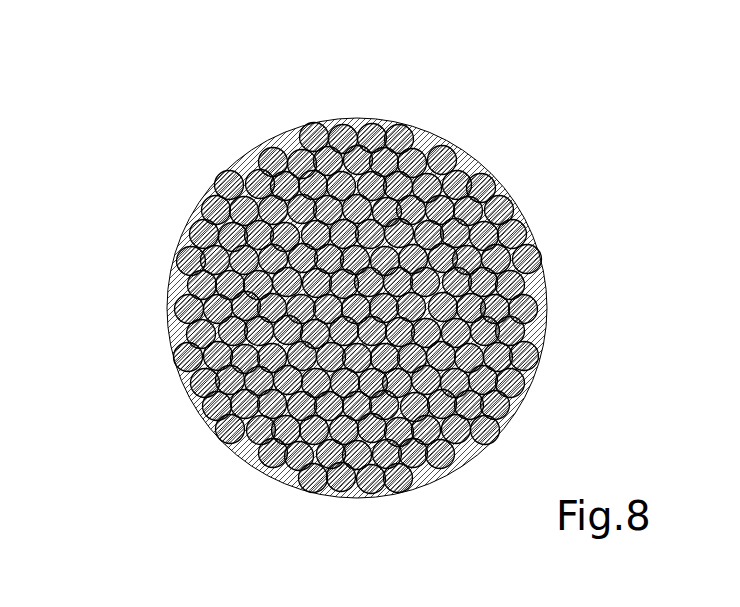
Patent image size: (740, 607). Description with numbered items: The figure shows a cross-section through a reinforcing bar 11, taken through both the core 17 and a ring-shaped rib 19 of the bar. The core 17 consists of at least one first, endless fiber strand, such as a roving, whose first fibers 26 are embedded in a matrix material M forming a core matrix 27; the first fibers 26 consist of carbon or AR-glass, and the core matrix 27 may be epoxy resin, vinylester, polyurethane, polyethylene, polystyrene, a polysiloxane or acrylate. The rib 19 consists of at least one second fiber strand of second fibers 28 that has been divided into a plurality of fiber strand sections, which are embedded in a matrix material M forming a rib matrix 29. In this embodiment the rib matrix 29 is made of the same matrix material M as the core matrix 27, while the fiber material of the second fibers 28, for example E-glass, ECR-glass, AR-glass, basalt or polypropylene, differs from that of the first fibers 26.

The reinforcing bar 11 is at (478, 100).
The core 17 is at (537, 250).
The rib 19 is at (497, 186).
The first fibers 26 is at (160, 295).
The second fibers 28 is at (337, 128).
The core matrix 27 is at (190, 412).
The rib matrix 29 is at (295, 485).